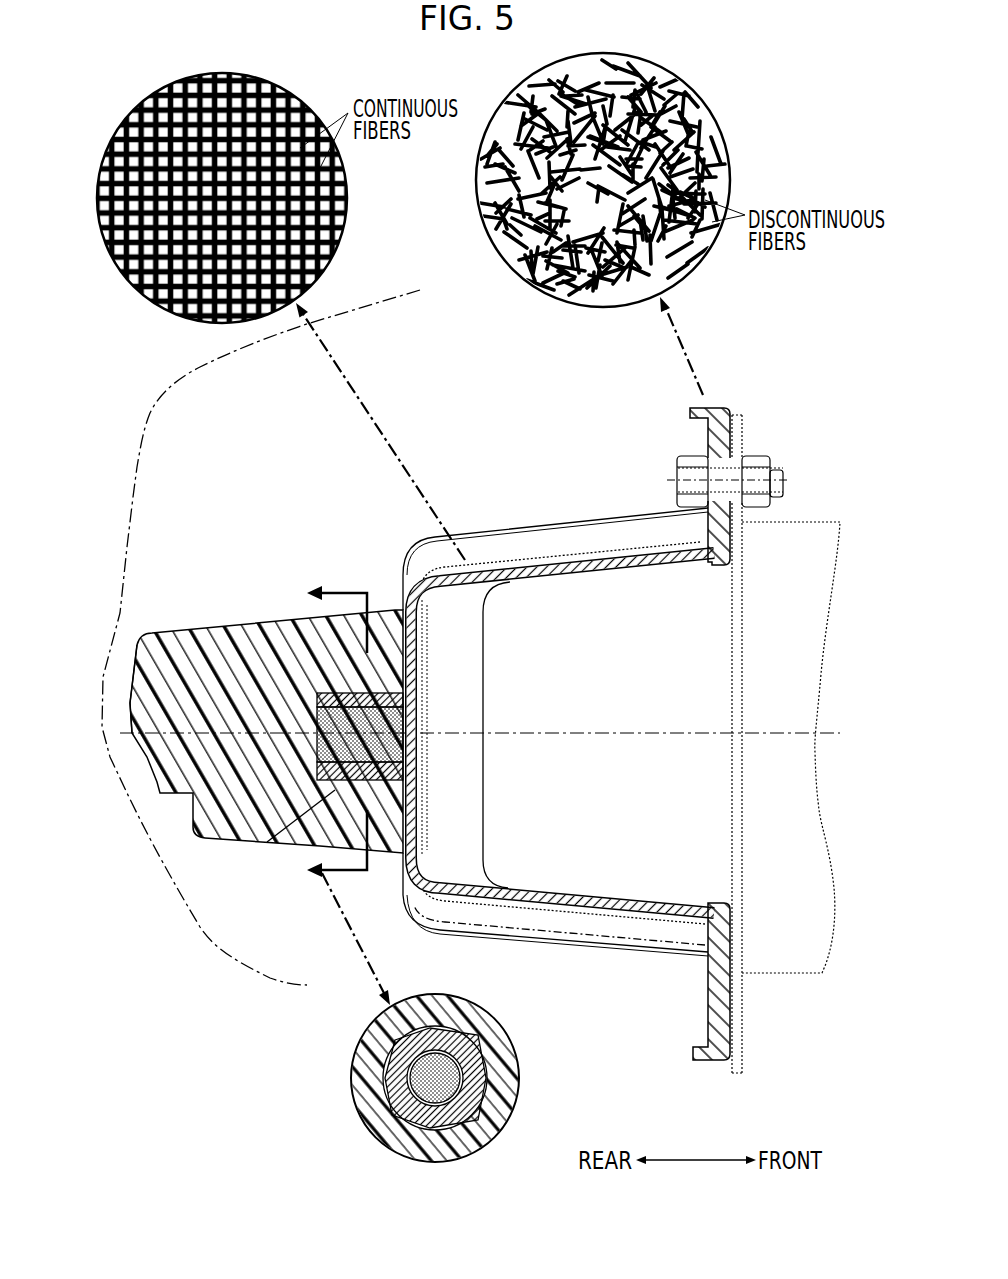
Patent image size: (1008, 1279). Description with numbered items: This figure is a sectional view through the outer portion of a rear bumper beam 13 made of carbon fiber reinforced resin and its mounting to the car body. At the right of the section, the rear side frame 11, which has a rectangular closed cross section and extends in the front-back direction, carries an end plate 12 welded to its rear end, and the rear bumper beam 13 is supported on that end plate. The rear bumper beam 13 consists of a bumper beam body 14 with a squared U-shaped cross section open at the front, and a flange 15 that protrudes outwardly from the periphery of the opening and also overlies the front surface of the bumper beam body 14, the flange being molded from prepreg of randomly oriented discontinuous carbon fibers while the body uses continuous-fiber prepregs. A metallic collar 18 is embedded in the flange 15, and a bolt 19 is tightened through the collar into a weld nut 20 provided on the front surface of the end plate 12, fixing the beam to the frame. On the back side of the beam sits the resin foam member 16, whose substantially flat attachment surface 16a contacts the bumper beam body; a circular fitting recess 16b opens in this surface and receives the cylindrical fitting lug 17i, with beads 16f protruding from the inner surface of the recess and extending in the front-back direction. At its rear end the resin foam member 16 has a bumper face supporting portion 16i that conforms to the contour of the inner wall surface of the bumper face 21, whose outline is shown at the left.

The rear side frame 11 is at (805, 520).
The end plate 12 is at (742, 856).
The rear bumper beam 13 is at (597, 734).
The bumper beam body 14 is at (603, 912).
The flange 15 is at (707, 734).
The resin foam member 16 is at (257, 622).
The attachment surface 16a is at (420, 636).
The fitting recess 16b is at (418, 724).
The bead 16f is at (418, 695).
The bumper face supporting portion 16i is at (137, 672).
The fitting lug 17i is at (267, 842).
The metallic collar 18 is at (718, 505).
The bolt 19 is at (677, 467).
The weld nut 20 is at (757, 455).
The bumper face 21 is at (132, 488).